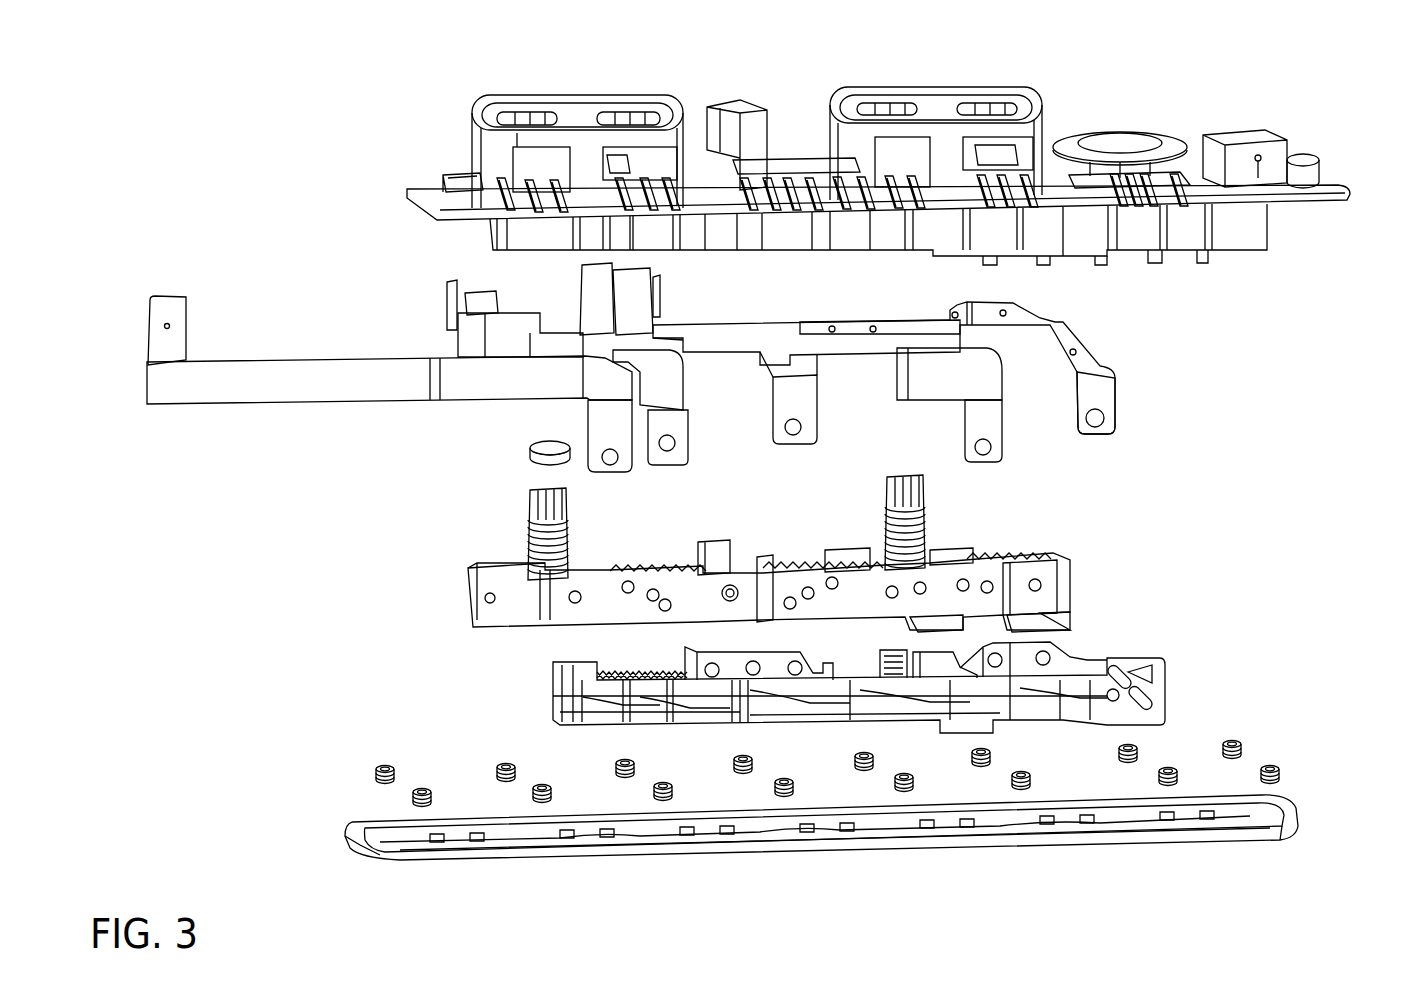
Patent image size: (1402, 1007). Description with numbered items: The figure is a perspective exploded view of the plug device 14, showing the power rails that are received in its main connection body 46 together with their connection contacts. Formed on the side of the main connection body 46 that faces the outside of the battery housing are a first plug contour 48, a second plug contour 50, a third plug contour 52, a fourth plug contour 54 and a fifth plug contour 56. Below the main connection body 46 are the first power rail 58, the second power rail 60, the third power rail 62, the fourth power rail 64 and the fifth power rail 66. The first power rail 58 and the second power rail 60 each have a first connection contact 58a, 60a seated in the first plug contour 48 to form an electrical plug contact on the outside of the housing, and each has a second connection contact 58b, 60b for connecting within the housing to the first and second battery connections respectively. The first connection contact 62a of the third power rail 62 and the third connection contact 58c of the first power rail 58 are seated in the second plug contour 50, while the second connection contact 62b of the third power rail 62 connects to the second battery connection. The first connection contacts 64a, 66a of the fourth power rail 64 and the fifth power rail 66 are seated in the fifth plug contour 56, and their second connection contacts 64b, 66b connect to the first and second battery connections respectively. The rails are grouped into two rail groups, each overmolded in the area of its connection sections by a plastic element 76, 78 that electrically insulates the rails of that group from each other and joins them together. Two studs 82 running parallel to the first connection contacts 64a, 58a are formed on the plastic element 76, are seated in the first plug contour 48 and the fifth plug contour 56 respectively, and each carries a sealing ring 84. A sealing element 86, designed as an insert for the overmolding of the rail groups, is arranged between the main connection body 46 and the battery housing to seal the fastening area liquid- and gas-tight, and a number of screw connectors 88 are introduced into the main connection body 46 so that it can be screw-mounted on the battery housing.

The plug device 14 is at (1347, 87).
The main connection body 46 is at (1321, 178).
The first plug contour 48 is at (947, 87).
The second plug contour 50 is at (741, 100).
The third plug contour 52 is at (1123, 133).
The fourth plug contour 54 is at (1236, 133).
The fifth plug contour 56 is at (576, 97).
The first power rail 58 is at (736, 343).
The first connection contact of the first power rail 58a is at (592, 263).
The second connection contact of the first power rail 58b is at (806, 411).
The third connection contact of the first power rail 58c is at (449, 300).
The second power rail 60 is at (664, 368).
The first connection contact of the second power rail 60a is at (634, 300).
The second connection contact of the second power rail 60b is at (678, 426).
The third power rail 62 is at (1049, 328).
The first connection contact of the third power rail 62a is at (656, 309).
The second connection contact of the third power rail 62b is at (1106, 395).
The fourth power rail 64 is at (330, 373).
The first connection contact of the fourth power rail 64a is at (168, 326).
The second connection contact of the fourth power rail 64b is at (624, 448).
The fifth power rail 66 is at (944, 371).
The first connection contact of the fifth power rail 66a is at (480, 293).
The second connection contact of the fifth power rail 66b is at (991, 426).
The plastic element 76 is at (1056, 582).
The plastic element 78 is at (1159, 680).
The studs 82 is at (536, 518).
The sealing ring 84 is at (530, 455).
The sealing element 86 is at (1244, 843).
The screw connectors 88 is at (1230, 745).